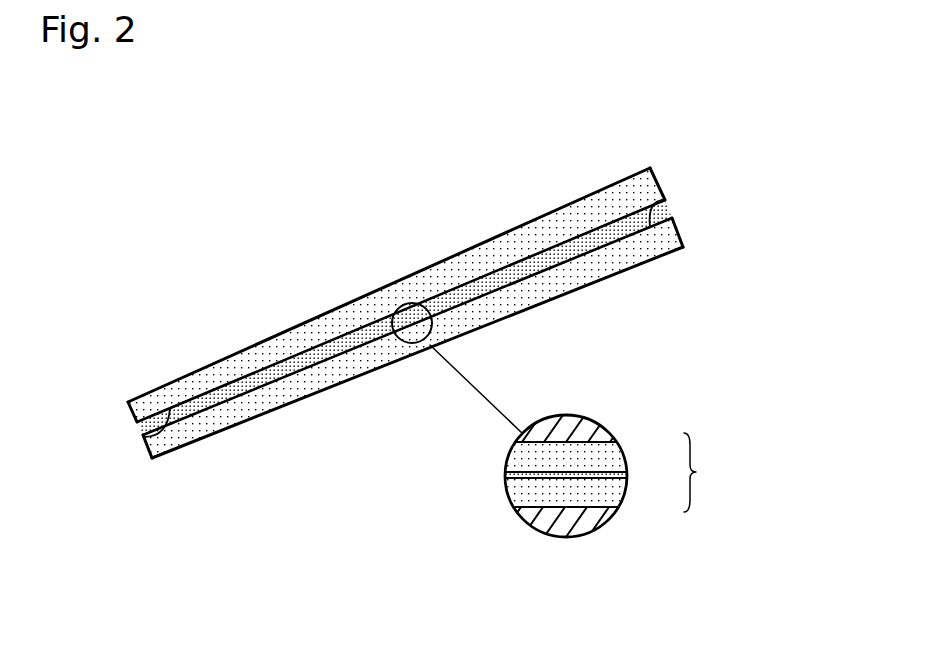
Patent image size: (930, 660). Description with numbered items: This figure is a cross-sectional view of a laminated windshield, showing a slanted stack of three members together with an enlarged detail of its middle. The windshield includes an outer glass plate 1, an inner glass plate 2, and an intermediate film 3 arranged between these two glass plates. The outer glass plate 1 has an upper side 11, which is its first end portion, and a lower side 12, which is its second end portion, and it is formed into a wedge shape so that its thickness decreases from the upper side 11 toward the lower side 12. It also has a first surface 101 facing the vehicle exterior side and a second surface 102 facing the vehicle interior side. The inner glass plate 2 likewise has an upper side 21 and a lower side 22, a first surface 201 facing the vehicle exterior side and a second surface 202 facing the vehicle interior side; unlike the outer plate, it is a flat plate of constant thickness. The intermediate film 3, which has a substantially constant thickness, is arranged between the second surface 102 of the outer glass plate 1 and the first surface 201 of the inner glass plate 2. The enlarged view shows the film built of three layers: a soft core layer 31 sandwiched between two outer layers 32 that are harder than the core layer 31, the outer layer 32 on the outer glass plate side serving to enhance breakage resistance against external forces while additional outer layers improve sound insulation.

The outer glass plate 1 is at (478, 268).
The inner glass plate 2 is at (545, 290).
The intermediate film 3 is at (352, 352).
The upper side 11 is at (656, 178).
The lower side 12 is at (132, 420).
The upper side 21 is at (678, 233).
The lower side 22 is at (150, 459).
The core layer 31 is at (620, 476).
The outer layer 32 is at (612, 456).
The first surface 101 is at (267, 340).
The second surface 102 is at (144, 440).
The first surface 201 is at (665, 208).
The second surface 202 is at (664, 255).